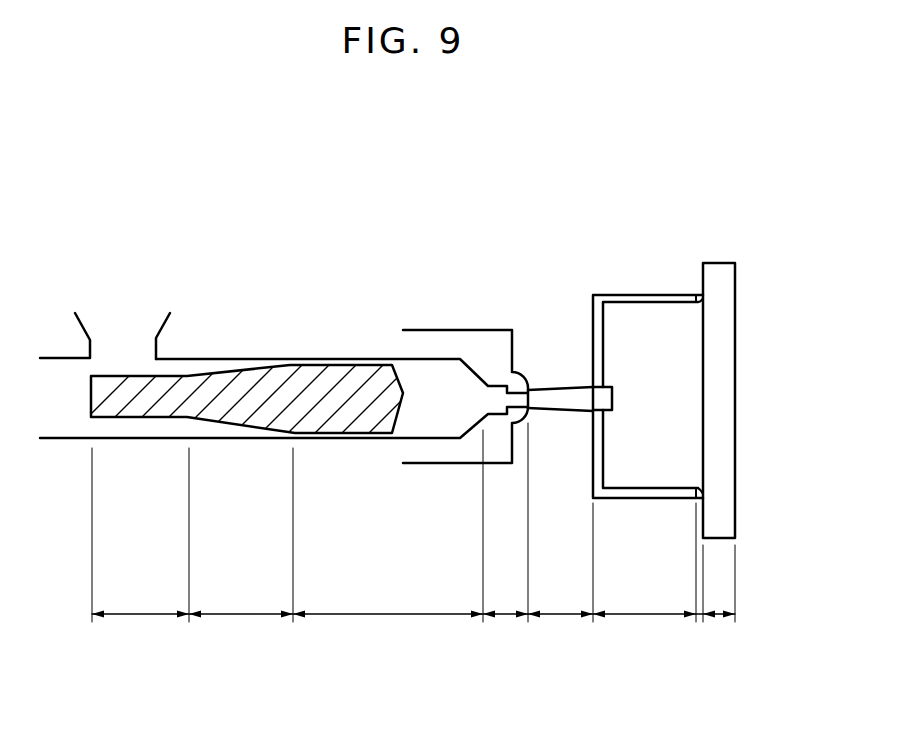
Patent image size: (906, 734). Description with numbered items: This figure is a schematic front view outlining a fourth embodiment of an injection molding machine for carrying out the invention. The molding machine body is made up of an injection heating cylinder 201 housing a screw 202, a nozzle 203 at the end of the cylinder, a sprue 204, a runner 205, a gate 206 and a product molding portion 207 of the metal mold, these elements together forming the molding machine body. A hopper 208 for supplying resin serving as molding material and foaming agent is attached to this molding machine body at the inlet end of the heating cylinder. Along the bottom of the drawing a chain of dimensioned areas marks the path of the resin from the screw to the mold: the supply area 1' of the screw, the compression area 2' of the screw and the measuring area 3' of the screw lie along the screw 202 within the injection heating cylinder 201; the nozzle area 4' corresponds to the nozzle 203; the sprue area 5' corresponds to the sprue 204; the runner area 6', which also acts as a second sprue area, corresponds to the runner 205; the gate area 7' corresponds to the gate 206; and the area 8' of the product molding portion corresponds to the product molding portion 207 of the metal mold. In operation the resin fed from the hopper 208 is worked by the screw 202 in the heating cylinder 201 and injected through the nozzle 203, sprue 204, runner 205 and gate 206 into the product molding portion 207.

The injection heating cylinder 201 is at (238, 357).
The screw 202 is at (322, 373).
The nozzle 203 is at (500, 390).
The sprue 204 is at (562, 395).
The runner 205 is at (637, 295).
The gate 206 is at (698, 297).
The product molding portion of the metal mold 207 is at (735, 308).
The hopper 208 is at (82, 328).
The supply area of the screw 1' is at (137, 636).
The compression area of the screw 2' is at (234, 636).
The measuring area of the screw 3' is at (397, 636).
The nozzle area 4' is at (507, 637).
The sprue area 5' is at (564, 636).
The runner area 6' is at (644, 637).
The gate area 7' is at (672, 653).
The area of the product molding portion of the metal mold 8' is at (759, 617).